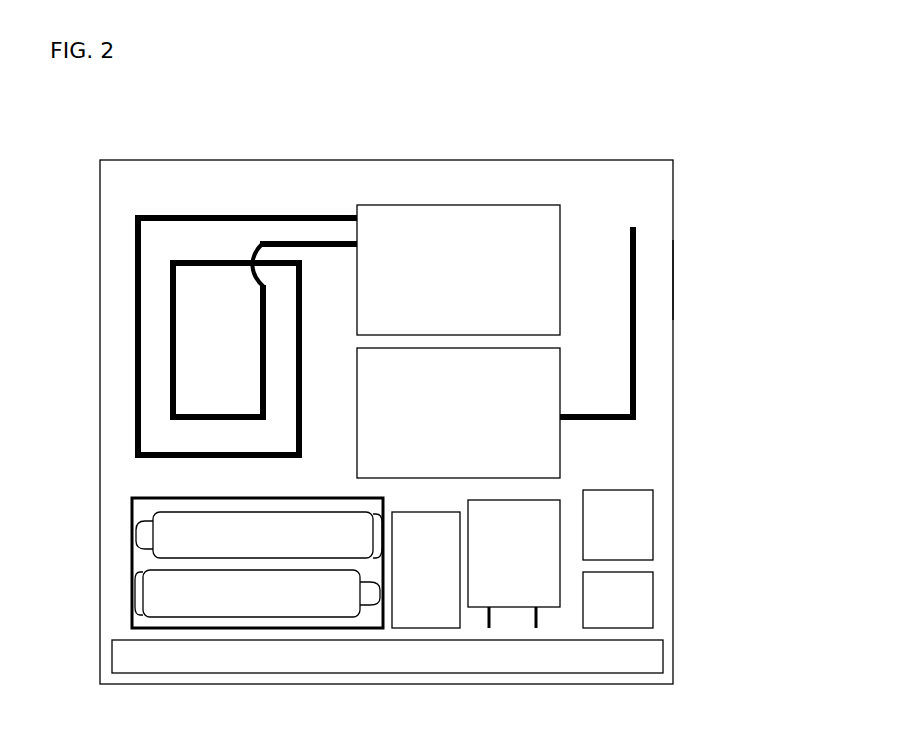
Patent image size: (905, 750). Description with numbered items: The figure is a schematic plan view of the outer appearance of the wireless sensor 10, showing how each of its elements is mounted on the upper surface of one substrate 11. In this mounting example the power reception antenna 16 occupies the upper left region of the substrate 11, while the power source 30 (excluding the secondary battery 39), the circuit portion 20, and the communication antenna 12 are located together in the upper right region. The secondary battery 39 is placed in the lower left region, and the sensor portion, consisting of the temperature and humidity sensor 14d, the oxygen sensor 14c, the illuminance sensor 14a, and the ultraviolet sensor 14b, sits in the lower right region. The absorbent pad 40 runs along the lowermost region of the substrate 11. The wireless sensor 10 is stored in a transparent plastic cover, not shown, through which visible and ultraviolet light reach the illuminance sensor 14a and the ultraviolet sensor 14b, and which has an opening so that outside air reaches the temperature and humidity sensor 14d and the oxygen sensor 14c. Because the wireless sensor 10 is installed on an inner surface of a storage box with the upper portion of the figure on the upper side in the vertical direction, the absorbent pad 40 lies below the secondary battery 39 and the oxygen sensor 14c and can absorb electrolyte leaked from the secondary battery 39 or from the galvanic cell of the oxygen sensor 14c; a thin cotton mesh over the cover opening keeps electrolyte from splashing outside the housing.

The wireless sensor 10 is at (617, 160).
The substrate 11 is at (650, 277).
The communication antenna 12 is at (636, 375).
The power reception antenna 16 is at (210, 283).
The circuit portion 20 is at (535, 375).
The power source 30 is at (383, 232).
The secondary battery 39 is at (237, 617).
The absorbent pad 40 is at (648, 665).
The illuminance sensor 14a is at (643, 622).
The ultraviolet sensor 14b is at (643, 548).
The oxygen sensor 14c is at (513, 592).
The temperature and humidity sensor 14d is at (447, 617).